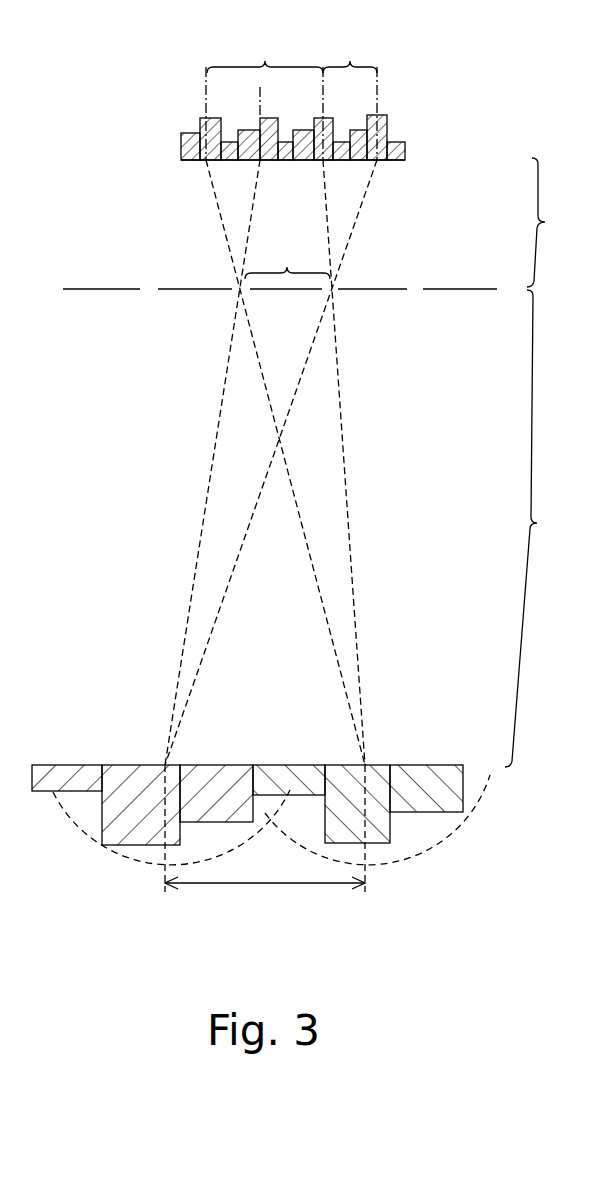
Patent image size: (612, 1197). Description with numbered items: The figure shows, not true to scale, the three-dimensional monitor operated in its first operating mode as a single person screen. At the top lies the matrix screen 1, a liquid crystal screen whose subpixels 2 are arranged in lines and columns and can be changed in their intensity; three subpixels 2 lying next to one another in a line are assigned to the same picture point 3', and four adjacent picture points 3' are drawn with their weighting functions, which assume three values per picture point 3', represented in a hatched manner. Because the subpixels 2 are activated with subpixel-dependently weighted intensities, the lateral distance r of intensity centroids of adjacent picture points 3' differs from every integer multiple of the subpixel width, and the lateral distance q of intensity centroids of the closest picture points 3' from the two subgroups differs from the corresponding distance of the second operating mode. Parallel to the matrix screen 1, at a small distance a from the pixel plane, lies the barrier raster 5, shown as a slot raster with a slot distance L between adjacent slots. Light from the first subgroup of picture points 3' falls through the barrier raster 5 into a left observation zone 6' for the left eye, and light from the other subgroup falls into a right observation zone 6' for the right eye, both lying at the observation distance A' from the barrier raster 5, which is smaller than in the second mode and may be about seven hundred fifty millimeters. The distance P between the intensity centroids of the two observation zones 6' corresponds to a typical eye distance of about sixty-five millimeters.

The matrix screen 1 is at (245, 169).
The subpixels 2 is at (189, 161).
The picture points 3' is at (293, 168).
The barrier raster 5 is at (78, 288).
The observation zones 6' is at (269, 827).
The lateral distance of intensity centroids of closest picture points q is at (265, 48).
The lateral distance of intensity centroids of adjacent picture points r is at (350, 47).
The slot distance L is at (287, 258).
The distance a is at (550, 222).
The observation distance A' is at (536, 528).
The distance between intensity centroids of the observation zones P is at (263, 890).